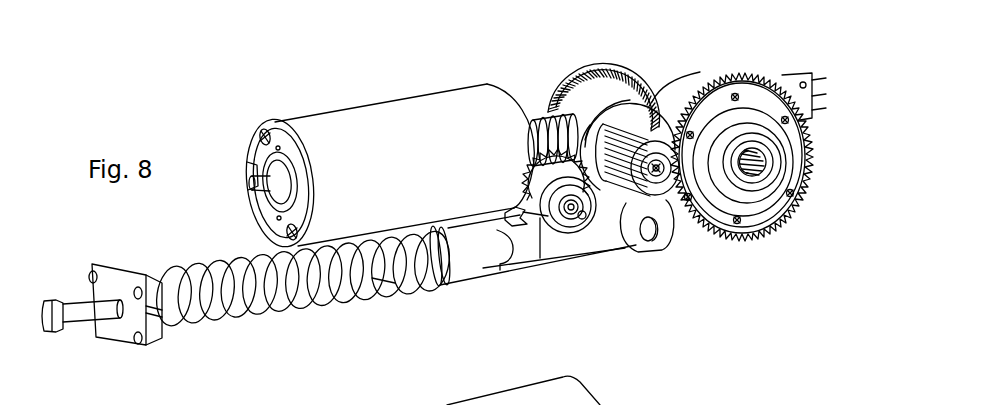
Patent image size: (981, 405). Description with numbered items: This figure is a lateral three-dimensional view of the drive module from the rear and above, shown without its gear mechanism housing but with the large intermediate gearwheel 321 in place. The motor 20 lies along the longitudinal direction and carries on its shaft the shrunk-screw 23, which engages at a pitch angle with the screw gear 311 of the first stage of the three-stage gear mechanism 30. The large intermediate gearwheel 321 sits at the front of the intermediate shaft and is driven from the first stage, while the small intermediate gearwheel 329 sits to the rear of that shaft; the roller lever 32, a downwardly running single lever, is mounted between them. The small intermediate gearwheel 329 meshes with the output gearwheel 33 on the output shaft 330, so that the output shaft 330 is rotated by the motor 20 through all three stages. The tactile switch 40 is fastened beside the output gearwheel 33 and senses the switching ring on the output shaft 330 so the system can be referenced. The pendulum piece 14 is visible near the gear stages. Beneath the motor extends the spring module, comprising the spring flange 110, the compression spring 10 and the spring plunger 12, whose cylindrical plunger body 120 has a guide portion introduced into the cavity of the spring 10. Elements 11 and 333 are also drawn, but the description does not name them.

The spring 10 is at (303, 300).
The bolt 11 is at (70, 330).
The spring flange 110 is at (152, 345).
The spring plunger 12 is at (458, 260).
The plunger body 120 is at (383, 279).
The pendulum piece 14 is at (563, 250).
The motor 20 is at (360, 146).
The shrunk-screw 23 is at (535, 110).
The three-stage gear mechanism 30 is at (671, 52).
The screw gear 311 is at (528, 215).
The roller lever 32 is at (662, 222).
The large intermediate gearwheel 321 is at (595, 80).
The small intermediate gearwheel 329 is at (628, 252).
The output gearwheel 33 is at (804, 244).
The output shaft 330 is at (737, 178).
The splined hub 333 is at (757, 180).
The tactile switch 40 is at (818, 80).